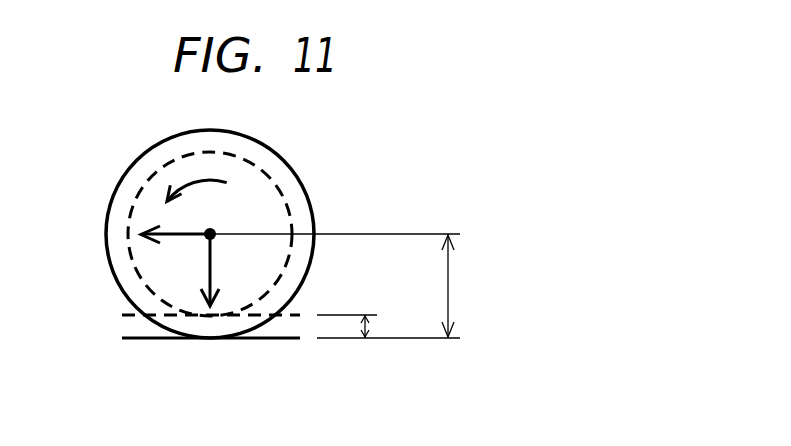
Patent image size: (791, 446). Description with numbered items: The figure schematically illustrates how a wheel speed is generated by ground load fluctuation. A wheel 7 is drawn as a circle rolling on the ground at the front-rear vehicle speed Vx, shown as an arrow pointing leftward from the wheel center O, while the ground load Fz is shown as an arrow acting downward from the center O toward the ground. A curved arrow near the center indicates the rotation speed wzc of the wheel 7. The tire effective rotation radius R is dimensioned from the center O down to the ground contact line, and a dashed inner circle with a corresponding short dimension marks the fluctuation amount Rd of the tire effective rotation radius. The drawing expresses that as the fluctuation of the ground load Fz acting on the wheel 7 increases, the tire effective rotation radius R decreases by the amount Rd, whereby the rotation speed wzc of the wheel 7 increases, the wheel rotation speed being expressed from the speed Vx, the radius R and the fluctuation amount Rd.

The wheel 7 is at (291, 161).
The wheel center O is at (220, 221).
The speed in the front-rear direction of the vehicle Vx is at (152, 234).
The ground load Fz is at (207, 268).
The rotation speed of the wheel wzc is at (196, 183).
The tire effective rotation radius R is at (456, 286).
The fluctuation amount of the tire effective rotation radius Rd is at (384, 324).